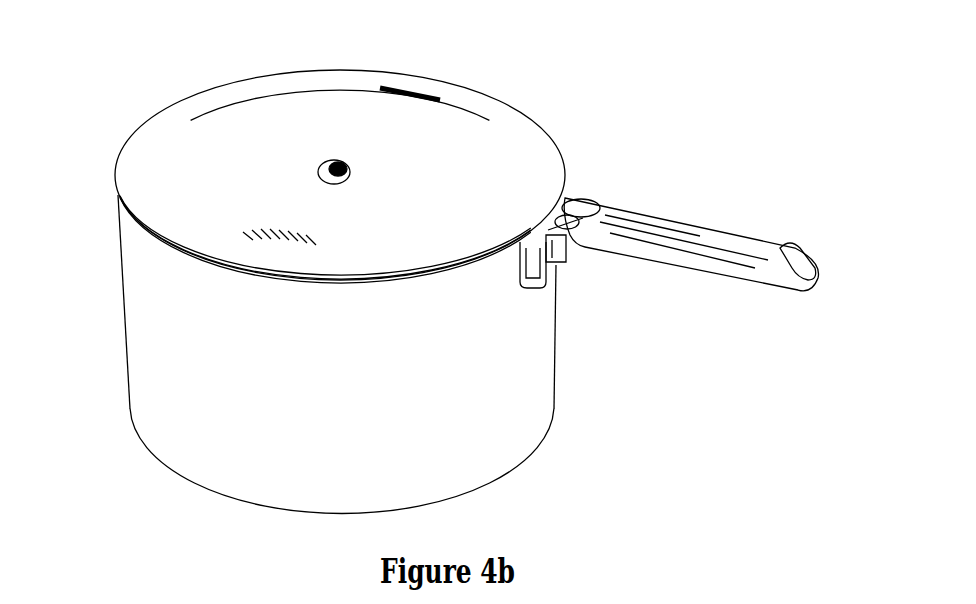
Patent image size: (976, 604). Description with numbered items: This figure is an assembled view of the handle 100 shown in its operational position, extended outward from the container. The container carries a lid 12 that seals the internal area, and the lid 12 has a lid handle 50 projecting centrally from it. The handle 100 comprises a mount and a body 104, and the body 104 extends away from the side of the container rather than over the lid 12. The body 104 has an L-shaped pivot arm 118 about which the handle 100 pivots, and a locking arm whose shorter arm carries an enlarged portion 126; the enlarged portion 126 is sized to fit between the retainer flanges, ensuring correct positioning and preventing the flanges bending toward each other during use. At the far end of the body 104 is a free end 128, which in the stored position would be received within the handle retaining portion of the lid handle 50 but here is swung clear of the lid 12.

The lid 12 is at (575, 101).
The lid handle 50 is at (330, 170).
The handle 100 is at (730, 288).
The body 104 is at (703, 224).
The pivot arm 118 is at (572, 197).
The enlarged portion 126 is at (537, 255).
The free end 128 is at (808, 262).